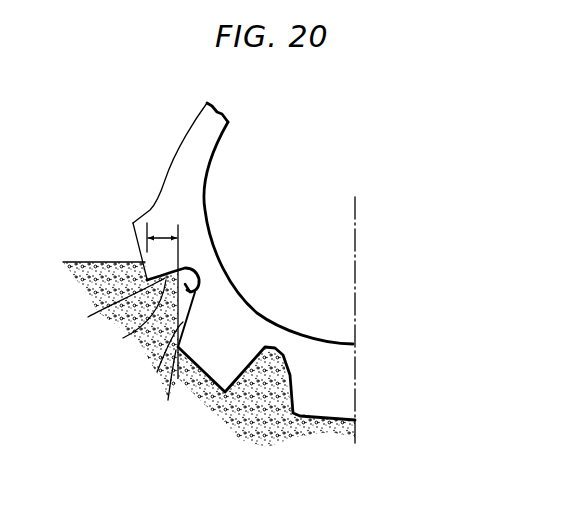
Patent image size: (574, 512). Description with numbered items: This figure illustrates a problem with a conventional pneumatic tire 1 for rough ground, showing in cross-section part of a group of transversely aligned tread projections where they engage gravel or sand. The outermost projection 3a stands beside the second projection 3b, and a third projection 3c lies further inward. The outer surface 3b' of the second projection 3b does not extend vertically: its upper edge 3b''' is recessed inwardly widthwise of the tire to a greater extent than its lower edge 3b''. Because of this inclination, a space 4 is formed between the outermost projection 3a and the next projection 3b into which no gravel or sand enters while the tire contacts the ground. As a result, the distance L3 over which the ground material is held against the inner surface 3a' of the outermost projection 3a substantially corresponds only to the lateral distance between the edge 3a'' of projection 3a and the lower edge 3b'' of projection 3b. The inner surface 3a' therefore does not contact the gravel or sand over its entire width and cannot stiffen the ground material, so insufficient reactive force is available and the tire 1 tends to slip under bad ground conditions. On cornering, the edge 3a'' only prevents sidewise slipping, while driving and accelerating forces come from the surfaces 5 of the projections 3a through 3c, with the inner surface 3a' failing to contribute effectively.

The tire 1 is at (226, 218).
The outermost projection 3a is at (153, 163).
The inner surface of the outermost projection 3a' is at (135, 320).
The edge of the outermost projection 3a'' is at (112, 304).
The second projection 3b is at (239, 308).
The outer surface of the second projection 3b' is at (156, 359).
The lower edge of the second projection 3b'' is at (168, 390).
The upper edge of the second projection 3b''' is at (249, 264).
The third projection 3c is at (314, 397).
The space 4 is at (200, 292).
The surfaces of the projections 5 is at (193, 375).
The distance L3 is at (162, 236).